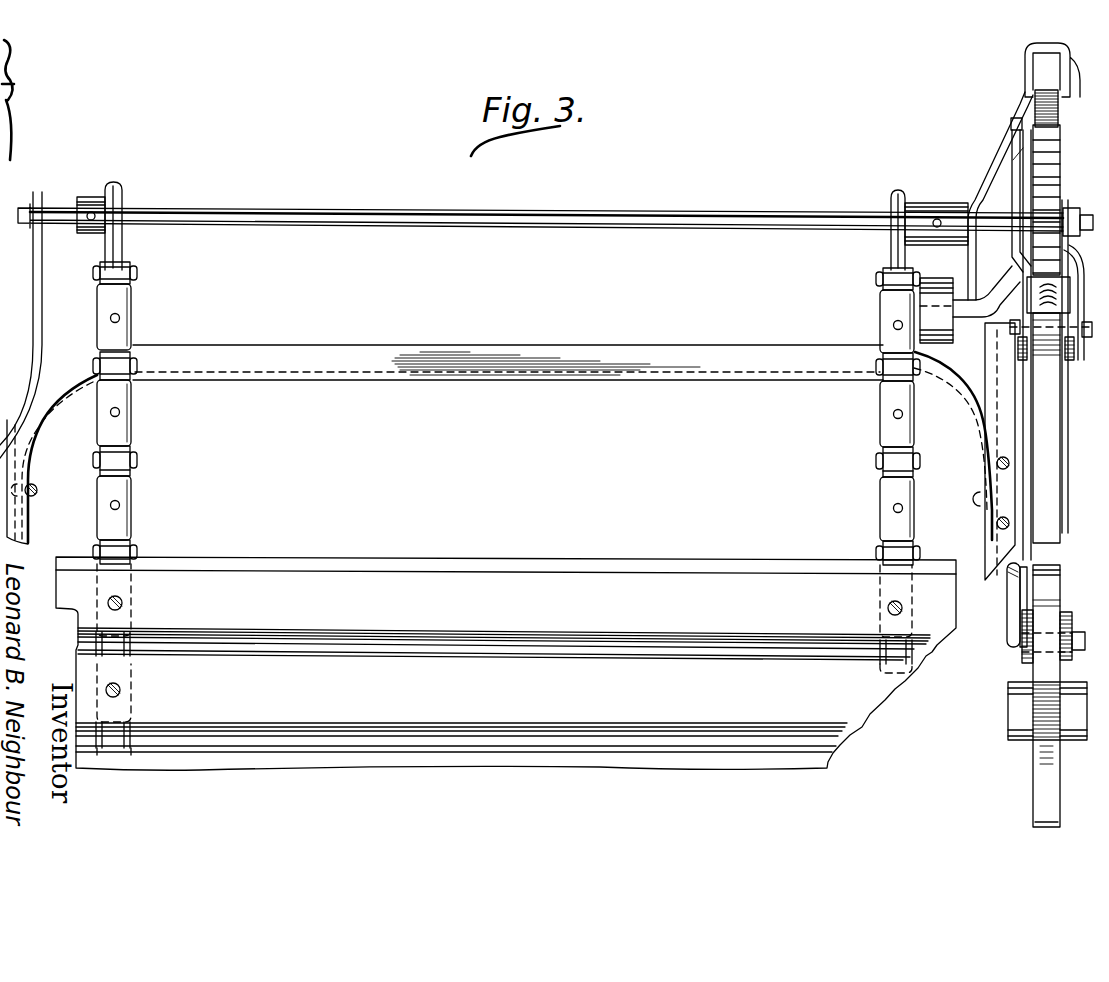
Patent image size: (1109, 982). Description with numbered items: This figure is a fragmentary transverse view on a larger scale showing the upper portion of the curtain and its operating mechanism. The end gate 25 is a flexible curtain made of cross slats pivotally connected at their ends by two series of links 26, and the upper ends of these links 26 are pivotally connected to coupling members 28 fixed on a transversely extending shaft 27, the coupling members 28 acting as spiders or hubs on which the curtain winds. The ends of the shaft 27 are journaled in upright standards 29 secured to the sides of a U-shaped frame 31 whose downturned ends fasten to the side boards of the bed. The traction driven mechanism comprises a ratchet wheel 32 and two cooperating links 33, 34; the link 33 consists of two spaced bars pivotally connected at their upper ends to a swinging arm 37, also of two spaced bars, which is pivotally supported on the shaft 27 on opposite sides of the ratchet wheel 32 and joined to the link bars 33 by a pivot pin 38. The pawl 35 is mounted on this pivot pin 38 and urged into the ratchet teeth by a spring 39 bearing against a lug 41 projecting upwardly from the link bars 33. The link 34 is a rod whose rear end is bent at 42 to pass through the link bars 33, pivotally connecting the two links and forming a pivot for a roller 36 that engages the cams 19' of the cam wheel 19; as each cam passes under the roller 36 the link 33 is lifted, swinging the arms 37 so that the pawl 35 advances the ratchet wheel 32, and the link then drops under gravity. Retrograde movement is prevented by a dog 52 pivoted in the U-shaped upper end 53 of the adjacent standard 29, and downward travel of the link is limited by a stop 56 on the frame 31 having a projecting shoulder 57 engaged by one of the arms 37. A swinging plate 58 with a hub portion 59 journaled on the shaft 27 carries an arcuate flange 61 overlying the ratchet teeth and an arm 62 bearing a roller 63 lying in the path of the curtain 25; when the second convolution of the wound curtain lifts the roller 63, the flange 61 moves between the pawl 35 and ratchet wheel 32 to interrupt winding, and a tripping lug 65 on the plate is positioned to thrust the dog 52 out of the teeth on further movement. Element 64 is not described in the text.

The cam wheel 19 is at (1012, 696).
The cams 19' is at (1012, 635).
The end gate 25 is at (488, 562).
The links 26 is at (128, 357).
The shaft 27 is at (198, 201).
The coupling members 28 is at (107, 231).
The upright standards 29 is at (38, 358).
The U-shaped frame 31 is at (507, 357).
The ratchet wheel 32 is at (1063, 158).
The link 33 is at (1030, 494).
The link 34 is at (1015, 625).
The pawl 35 is at (1066, 276).
The roller 36 is at (1033, 663).
The swinging arm 37 is at (1063, 212).
The pivot pin 38 is at (1088, 339).
The spring 39 is at (1057, 297).
The lug 41 is at (1050, 325).
The laterally bent end 42 is at (1020, 653).
The dog 52 is at (1030, 112).
The U-shaped upper end 53 is at (1067, 112).
The stop 56 is at (1003, 407).
The projecting shoulder 57 is at (1003, 355).
The swinging plate 58 is at (1016, 180).
The hub portion 59 is at (1003, 228).
The arcuate flange 61 is at (1067, 213).
The arm 62 is at (1015, 255).
The roller 63 is at (957, 277).
The rod 64 is at (1013, 160).
The tripping lug 65 is at (1011, 132).